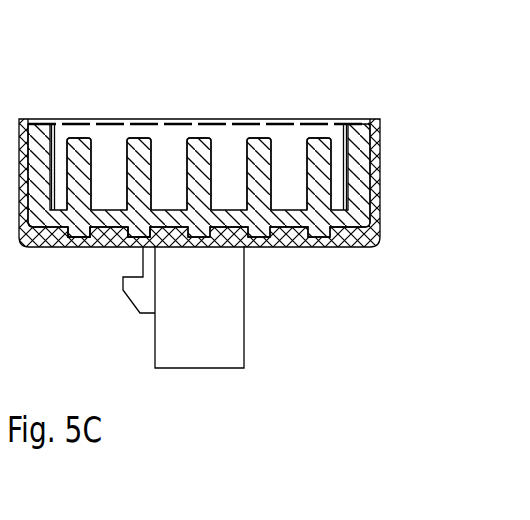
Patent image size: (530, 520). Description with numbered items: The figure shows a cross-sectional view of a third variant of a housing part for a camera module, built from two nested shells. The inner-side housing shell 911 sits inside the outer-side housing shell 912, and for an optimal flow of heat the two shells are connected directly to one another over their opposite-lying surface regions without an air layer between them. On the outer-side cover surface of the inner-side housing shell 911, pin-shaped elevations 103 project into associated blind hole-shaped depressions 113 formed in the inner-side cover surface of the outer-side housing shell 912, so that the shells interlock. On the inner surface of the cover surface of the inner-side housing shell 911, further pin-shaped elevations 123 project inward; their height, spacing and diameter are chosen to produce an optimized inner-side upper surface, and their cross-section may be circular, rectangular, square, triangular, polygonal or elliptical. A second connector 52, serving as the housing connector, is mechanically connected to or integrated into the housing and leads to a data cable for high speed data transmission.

The outer-side housing shell 912 is at (375, 217).
The inner-side housing shell 911 is at (347, 218).
The pin-shaped elevations 123 is at (313, 142).
The pin-shaped elevations 103 is at (80, 236).
The blind hole-shaped depressions 113 is at (137, 236).
The second connector 52 is at (228, 322).